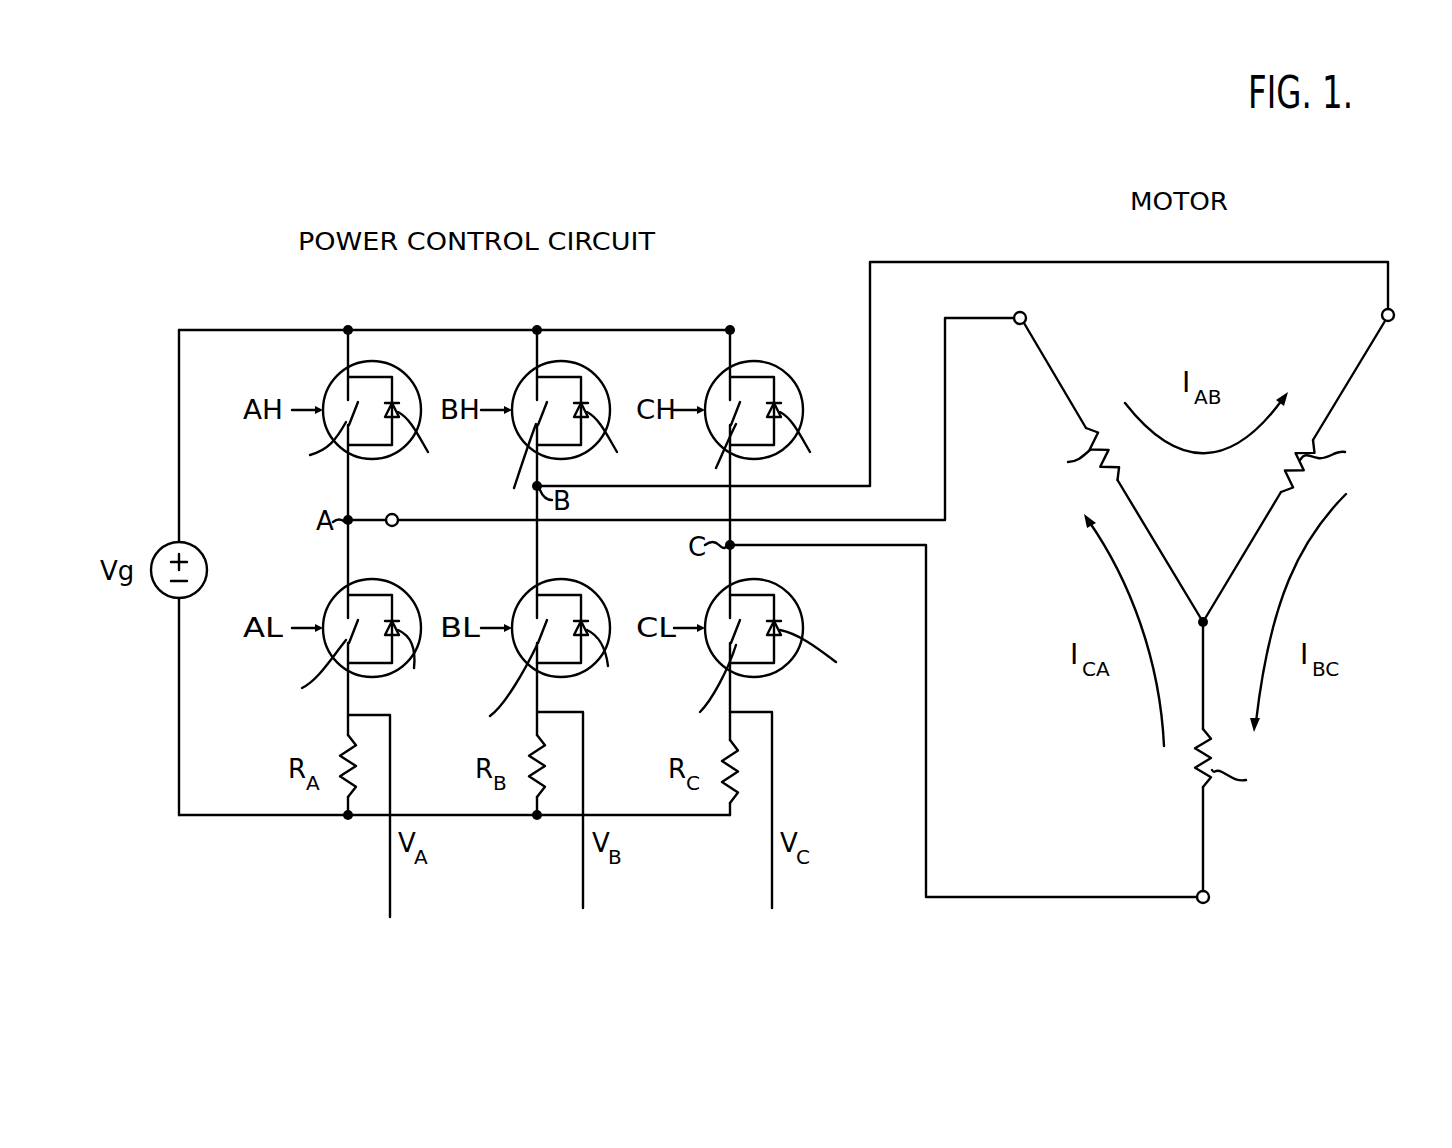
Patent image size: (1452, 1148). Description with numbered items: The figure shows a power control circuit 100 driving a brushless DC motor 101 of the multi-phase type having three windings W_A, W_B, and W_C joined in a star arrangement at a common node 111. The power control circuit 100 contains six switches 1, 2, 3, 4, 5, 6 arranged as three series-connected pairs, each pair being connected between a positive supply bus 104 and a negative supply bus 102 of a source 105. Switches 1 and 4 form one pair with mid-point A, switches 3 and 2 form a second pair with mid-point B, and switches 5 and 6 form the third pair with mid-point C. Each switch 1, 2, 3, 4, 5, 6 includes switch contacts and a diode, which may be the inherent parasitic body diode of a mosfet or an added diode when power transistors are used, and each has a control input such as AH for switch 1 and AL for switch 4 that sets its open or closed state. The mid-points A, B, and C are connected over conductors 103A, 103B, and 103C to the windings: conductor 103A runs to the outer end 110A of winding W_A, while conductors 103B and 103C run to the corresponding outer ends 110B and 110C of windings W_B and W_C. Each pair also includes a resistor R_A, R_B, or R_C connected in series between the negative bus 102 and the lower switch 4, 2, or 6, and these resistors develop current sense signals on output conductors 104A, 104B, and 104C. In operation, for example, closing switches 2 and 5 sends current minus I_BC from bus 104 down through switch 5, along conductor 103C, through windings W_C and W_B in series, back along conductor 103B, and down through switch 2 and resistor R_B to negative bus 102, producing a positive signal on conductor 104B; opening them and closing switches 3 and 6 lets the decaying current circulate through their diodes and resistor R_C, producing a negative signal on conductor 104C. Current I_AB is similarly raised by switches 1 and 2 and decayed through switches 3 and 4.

The power control circuit 100 is at (180, 317).
The brushless DC motor 101 is at (1258, 342).
The negative supply bus 102 is at (258, 815).
The conductor 103A is at (945, 512).
The conductor 103B is at (1012, 262).
The conductor 103C is at (1096, 897).
The positive supply bus 104 is at (515, 330).
The output conductor 104A is at (391, 894).
The conductor 104B is at (584, 896).
The output conductor 104C is at (773, 896).
The source 105 is at (207, 558).
The outer end of winding W_A 110A is at (1020, 300).
The motor terminal B 110B is at (1386, 311).
The motor terminal C 110C is at (1208, 903).
The motor neutral node 111 is at (1207, 622).
The switch 1 is at (406, 374).
The switch 2 is at (617, 570).
The switch 3 is at (595, 374).
The switch 4 is at (406, 592).
The switch 5 is at (788, 374).
The switch 6 is at (788, 592).